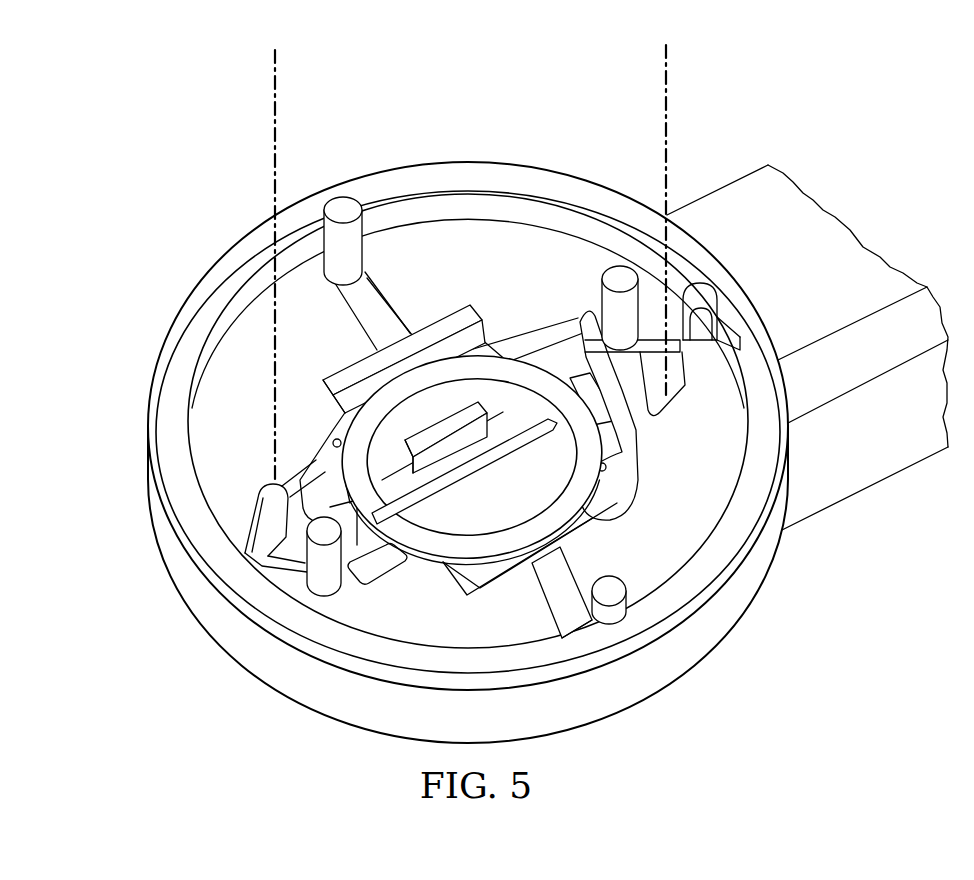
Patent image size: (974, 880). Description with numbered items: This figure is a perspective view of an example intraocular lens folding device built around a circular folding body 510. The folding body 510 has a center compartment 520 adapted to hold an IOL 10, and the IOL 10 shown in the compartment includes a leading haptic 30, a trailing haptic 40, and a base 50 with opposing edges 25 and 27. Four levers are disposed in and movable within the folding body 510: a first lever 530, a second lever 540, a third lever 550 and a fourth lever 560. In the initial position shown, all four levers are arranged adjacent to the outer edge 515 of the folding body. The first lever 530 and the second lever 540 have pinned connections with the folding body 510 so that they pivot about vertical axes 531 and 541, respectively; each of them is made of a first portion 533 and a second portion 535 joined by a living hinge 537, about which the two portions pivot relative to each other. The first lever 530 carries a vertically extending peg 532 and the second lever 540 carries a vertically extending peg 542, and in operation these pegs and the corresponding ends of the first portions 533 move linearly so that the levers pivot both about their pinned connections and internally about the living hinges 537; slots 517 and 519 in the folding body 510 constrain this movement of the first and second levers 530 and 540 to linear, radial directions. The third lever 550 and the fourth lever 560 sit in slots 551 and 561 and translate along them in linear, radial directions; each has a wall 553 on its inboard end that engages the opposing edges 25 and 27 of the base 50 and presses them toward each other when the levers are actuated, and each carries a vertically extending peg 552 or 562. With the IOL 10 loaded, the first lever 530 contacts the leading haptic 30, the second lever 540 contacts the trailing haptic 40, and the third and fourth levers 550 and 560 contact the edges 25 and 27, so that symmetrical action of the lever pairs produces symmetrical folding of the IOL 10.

The folding body 510 is at (588, 82).
The outer edge 515 is at (398, 158).
The vertical axis 531 is at (273, 67).
The vertical axis 541 is at (668, 60).
The second portion 535 is at (655, 378).
The wall 553 is at (455, 330).
The slot 519 is at (547, 333).
The center compartment 520 is at (550, 328).
The leading haptic 30 is at (323, 457).
The slot 551 is at (405, 292).
The third lever 550 is at (390, 323).
The edge 25 is at (380, 395).
The peg 552 is at (342, 205).
The peg 542 is at (617, 270).
The first portion 533 is at (610, 325).
The second lever 540 is at (696, 288).
The living hinge 537 is at (718, 337).
The first lever 530 is at (265, 490).
The peg 532 is at (320, 568).
The slot 517 is at (367, 582).
The edge 27 is at (457, 575).
The fourth lever 560 is at (567, 600).
The slot 561 is at (550, 637).
The peg 562 is at (615, 585).
The IOL 10 is at (433, 540).
The base 50 is at (472, 457).
The trailing haptic 40 is at (557, 468).